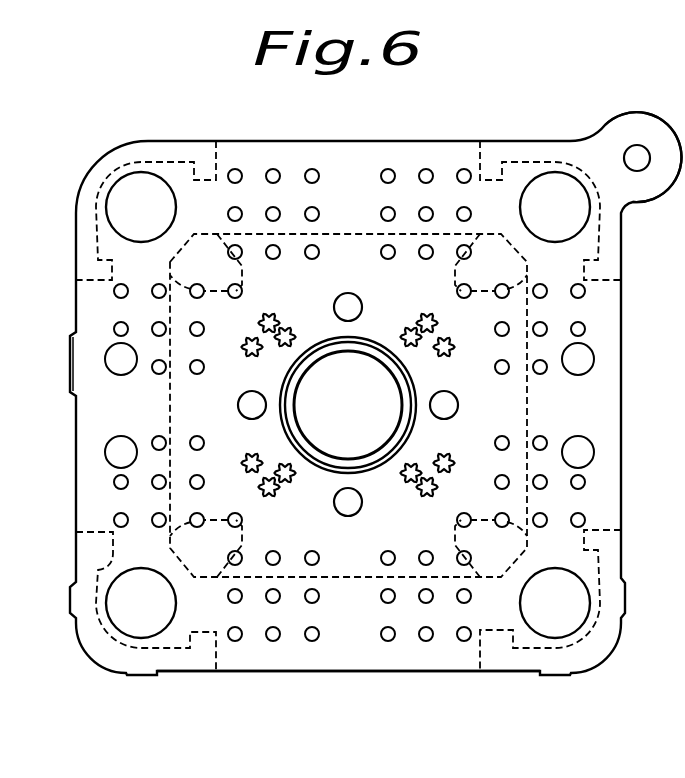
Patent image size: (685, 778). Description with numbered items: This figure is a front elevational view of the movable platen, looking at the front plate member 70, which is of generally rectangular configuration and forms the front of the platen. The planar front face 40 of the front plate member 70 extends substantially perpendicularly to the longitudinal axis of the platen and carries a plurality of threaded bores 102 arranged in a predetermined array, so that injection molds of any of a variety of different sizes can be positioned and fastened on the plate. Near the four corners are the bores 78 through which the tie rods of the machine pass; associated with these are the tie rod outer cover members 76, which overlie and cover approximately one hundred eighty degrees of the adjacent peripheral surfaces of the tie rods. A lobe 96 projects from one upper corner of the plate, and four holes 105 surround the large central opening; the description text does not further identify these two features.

The front face 40 is at (362, 660).
The front plate member 70 is at (362, 157).
The tie rod outer cover members 76 is at (146, 141).
The bores 78 is at (106, 218).
The mounting lobe 96 is at (617, 117).
The threaded bores 102 is at (114, 293).
The locating holes 105 is at (238, 401).